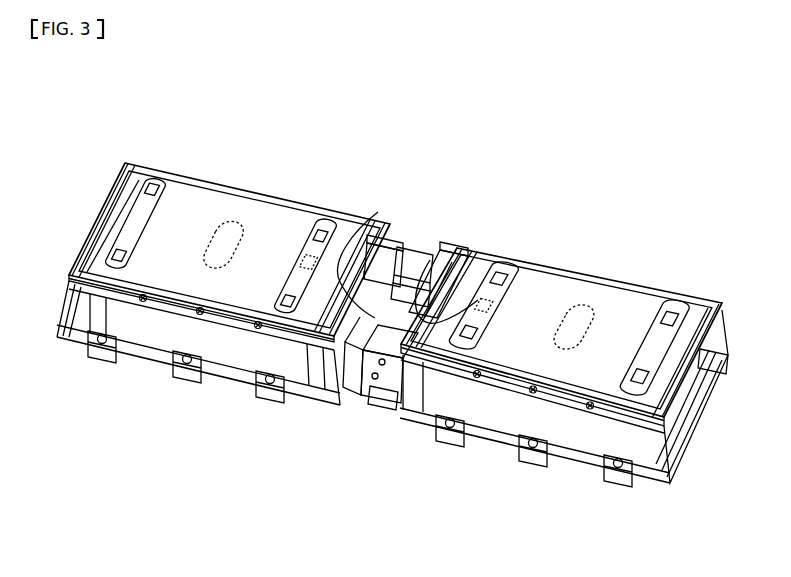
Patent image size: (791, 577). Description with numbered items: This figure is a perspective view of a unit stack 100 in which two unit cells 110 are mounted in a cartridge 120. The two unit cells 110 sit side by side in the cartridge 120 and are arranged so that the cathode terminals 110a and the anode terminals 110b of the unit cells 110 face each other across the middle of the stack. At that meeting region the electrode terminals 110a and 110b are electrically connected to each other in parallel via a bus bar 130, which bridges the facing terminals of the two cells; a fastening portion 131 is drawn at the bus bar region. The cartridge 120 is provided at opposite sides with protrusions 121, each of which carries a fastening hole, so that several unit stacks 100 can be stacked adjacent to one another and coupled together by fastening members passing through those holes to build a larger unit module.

The unit stack 100 is at (113, 127).
The unit cell 110 is at (270, 214).
The cathode terminal 110a is at (437, 247).
The anode terminal 110b is at (350, 258).
The cartridge 120 is at (157, 348).
The protrusion 121 is at (270, 393).
The bus bar 130 is at (363, 372).
The fastening portion 131 is at (372, 398).